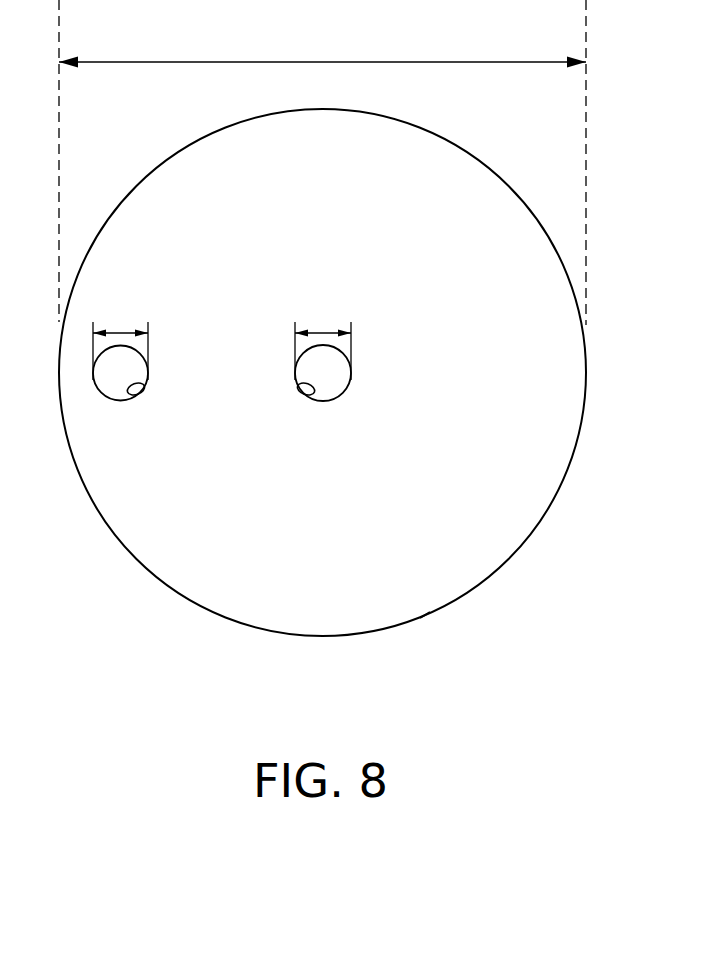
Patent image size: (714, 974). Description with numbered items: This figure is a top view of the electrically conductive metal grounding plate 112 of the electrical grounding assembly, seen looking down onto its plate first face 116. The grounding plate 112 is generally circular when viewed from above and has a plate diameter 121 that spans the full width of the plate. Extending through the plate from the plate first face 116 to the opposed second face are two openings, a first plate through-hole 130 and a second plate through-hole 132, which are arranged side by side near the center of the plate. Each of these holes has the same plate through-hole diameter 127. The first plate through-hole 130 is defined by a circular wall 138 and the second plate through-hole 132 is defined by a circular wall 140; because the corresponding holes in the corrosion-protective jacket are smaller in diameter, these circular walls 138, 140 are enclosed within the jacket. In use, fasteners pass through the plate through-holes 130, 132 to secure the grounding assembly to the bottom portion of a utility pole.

The grounding plate 112 is at (170, 642).
The plate first face 116 is at (407, 580).
The plate diameter 121 is at (322, 62).
The plate through-hole diameter 127 is at (123, 326).
The first plate through-hole 130 is at (328, 384).
The second plate through-hole 132 is at (118, 384).
The circular wall 138 is at (130, 395).
The circular wall 140 is at (311, 395).